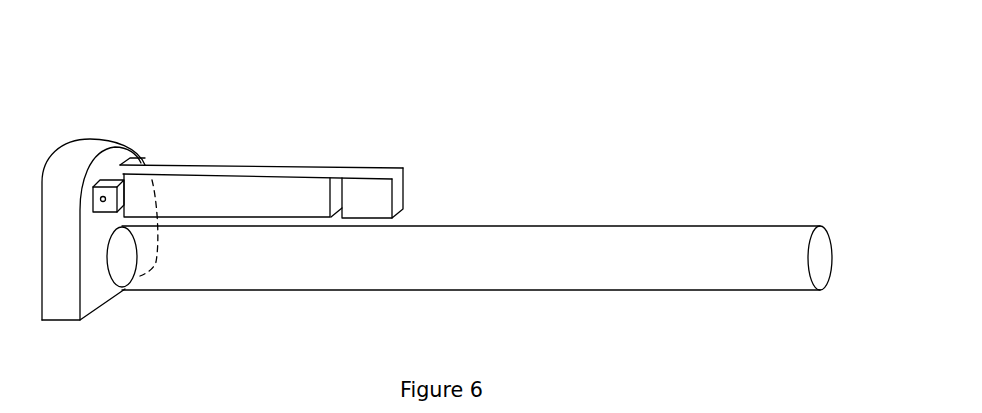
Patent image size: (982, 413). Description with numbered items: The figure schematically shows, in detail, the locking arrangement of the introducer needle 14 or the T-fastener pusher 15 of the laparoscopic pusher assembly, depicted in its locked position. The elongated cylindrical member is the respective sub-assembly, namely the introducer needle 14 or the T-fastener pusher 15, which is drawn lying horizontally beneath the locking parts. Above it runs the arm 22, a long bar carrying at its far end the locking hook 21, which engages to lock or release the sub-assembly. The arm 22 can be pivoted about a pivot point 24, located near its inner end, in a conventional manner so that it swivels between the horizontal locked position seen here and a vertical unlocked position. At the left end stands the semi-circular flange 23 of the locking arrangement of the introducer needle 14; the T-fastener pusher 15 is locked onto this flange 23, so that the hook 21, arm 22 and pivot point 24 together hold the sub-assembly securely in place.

The introducer needle 14 is at (469, 222).
The T-fastener pusher 15 is at (647, 227).
The hook 21 is at (398, 193).
The arm 22 is at (253, 167).
The semi-circular flange 23 is at (61, 170).
The pivot point 24 is at (102, 201).